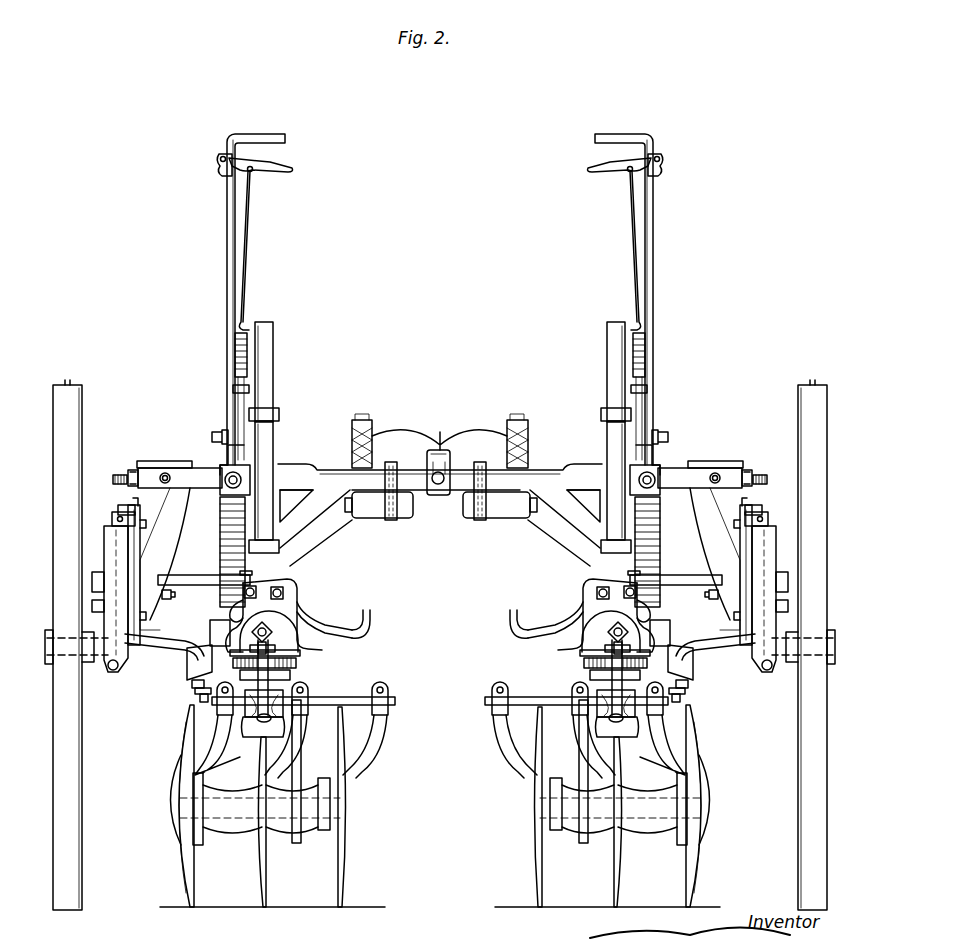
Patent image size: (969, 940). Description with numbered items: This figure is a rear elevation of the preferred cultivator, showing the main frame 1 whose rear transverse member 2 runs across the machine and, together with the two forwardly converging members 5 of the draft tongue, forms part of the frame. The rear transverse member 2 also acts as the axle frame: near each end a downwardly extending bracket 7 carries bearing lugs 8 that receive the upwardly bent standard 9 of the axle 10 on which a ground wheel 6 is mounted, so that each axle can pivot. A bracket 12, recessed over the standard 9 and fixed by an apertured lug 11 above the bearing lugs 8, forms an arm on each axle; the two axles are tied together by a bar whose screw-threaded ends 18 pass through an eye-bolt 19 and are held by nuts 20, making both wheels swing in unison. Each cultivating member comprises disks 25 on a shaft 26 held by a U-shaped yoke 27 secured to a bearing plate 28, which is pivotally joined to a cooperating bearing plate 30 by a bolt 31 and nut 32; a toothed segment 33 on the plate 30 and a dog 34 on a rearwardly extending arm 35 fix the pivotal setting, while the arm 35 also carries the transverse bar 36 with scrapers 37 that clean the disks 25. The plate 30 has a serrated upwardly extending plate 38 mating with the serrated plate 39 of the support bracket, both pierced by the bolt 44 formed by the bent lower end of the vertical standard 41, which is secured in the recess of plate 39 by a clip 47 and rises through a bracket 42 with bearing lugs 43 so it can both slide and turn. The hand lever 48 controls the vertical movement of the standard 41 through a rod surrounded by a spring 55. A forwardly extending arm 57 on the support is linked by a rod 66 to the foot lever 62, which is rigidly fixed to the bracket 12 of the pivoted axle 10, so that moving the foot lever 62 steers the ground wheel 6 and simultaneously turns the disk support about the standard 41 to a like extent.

The main frame 1 is at (455, 493).
The rear transverse member 2 is at (560, 504).
The forwardly converging members 5 is at (439, 426).
The ground wheels 6 is at (79, 385).
The downwardly extending brackets 7 is at (182, 470).
The bearing lugs 8 is at (140, 544).
The standard 9 is at (120, 511).
The axle 10 is at (440, 664).
The apertured lug 11 is at (112, 520).
The bracket 12 is at (104, 546).
The screw-threaded ends 18 is at (118, 474).
The eye-bolt 19 is at (172, 466).
The nuts 20 is at (133, 470).
The disks 25 is at (340, 910).
The shaft 26 is at (232, 834).
The yoke 27 is at (240, 750).
The bearing plate 28 is at (292, 676).
The bearing plate 30 is at (298, 662).
The bolt 31 is at (363, 622).
The nut 32 is at (302, 653).
The toothed segment 33 is at (196, 690).
The dog 34 is at (200, 698).
The rearwardly extending arm 35 is at (258, 738).
The transverse bar 36 is at (368, 697).
The scrapers 37 is at (212, 745).
The upwardly extending plate 38 is at (252, 634).
The plate 39 is at (298, 600).
The vertical standard 41 is at (273, 326).
The bracket 42 is at (280, 462).
The bearing lugs 43 is at (280, 414).
The bolt 44 is at (232, 612).
The clip 47 is at (279, 586).
The hand lever 48 is at (275, 134).
The spring 55 is at (222, 528).
The forwardly extending arm 57 is at (194, 664).
The foot lever 62 is at (316, 618).
The rod 66 is at (196, 640).